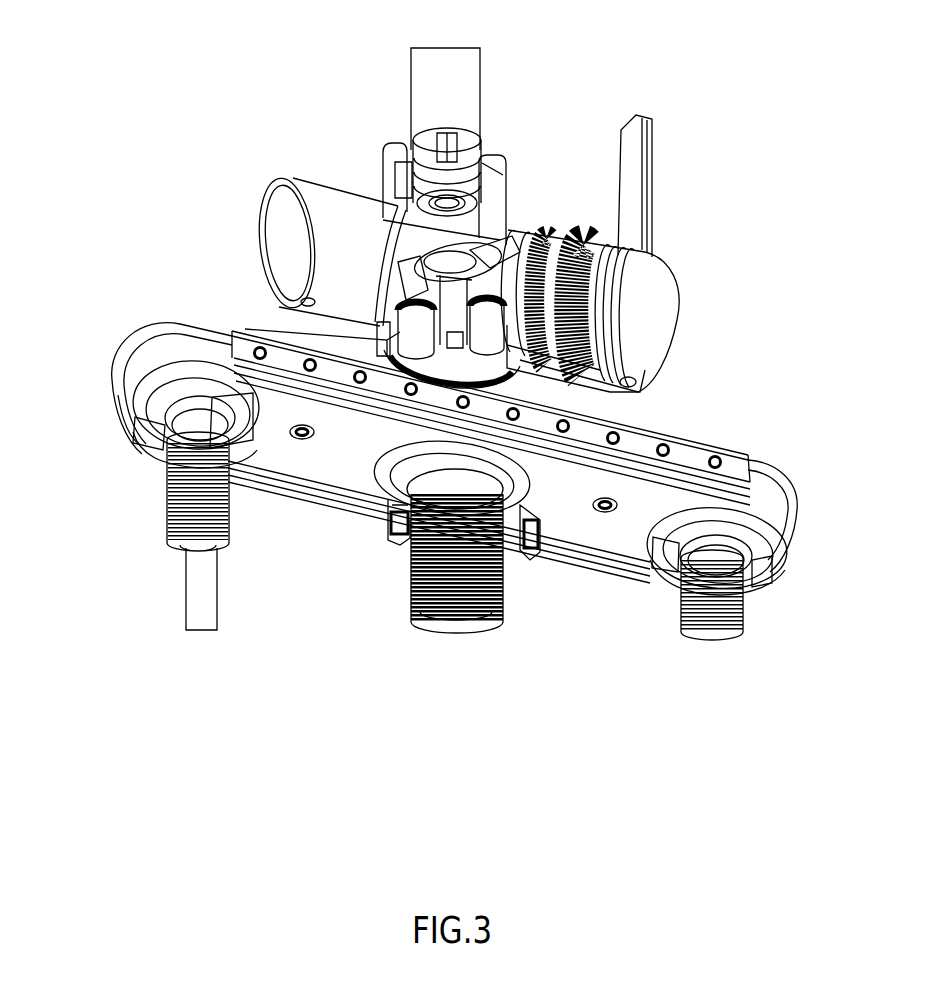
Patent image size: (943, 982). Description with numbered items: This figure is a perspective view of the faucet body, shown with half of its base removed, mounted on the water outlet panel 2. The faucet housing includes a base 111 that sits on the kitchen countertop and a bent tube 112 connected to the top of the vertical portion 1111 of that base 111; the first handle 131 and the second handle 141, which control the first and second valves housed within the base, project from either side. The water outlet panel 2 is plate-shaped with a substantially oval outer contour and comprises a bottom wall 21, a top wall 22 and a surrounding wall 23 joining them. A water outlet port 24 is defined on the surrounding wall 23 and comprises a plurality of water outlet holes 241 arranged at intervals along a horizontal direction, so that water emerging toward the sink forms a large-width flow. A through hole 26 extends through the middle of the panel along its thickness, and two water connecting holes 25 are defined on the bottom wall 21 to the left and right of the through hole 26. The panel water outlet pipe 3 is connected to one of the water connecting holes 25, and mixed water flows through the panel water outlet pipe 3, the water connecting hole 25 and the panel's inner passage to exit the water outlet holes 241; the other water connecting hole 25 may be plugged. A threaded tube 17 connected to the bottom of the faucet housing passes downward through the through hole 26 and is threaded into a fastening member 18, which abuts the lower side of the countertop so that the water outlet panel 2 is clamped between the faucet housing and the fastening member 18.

The water outlet panel 2 is at (190, 342).
The top wall 22 is at (230, 327).
The surrounding wall 23 is at (155, 357).
The water outlet port 24 is at (630, 437).
The water outlet holes 241 is at (677, 440).
The bottom wall 21 is at (168, 467).
The water connecting hole 25 is at (170, 520).
The panel water outlet pipe 3 is at (205, 580).
The threaded tube 17 is at (412, 607).
The fastening member 18 is at (388, 513).
The through hole 26 is at (517, 503).
The bent tube 112 is at (440, 68).
The base 111 is at (395, 148).
The vertical portion 1111 is at (500, 172).
The second handle 141 is at (325, 245).
The first handle 131 is at (660, 312).